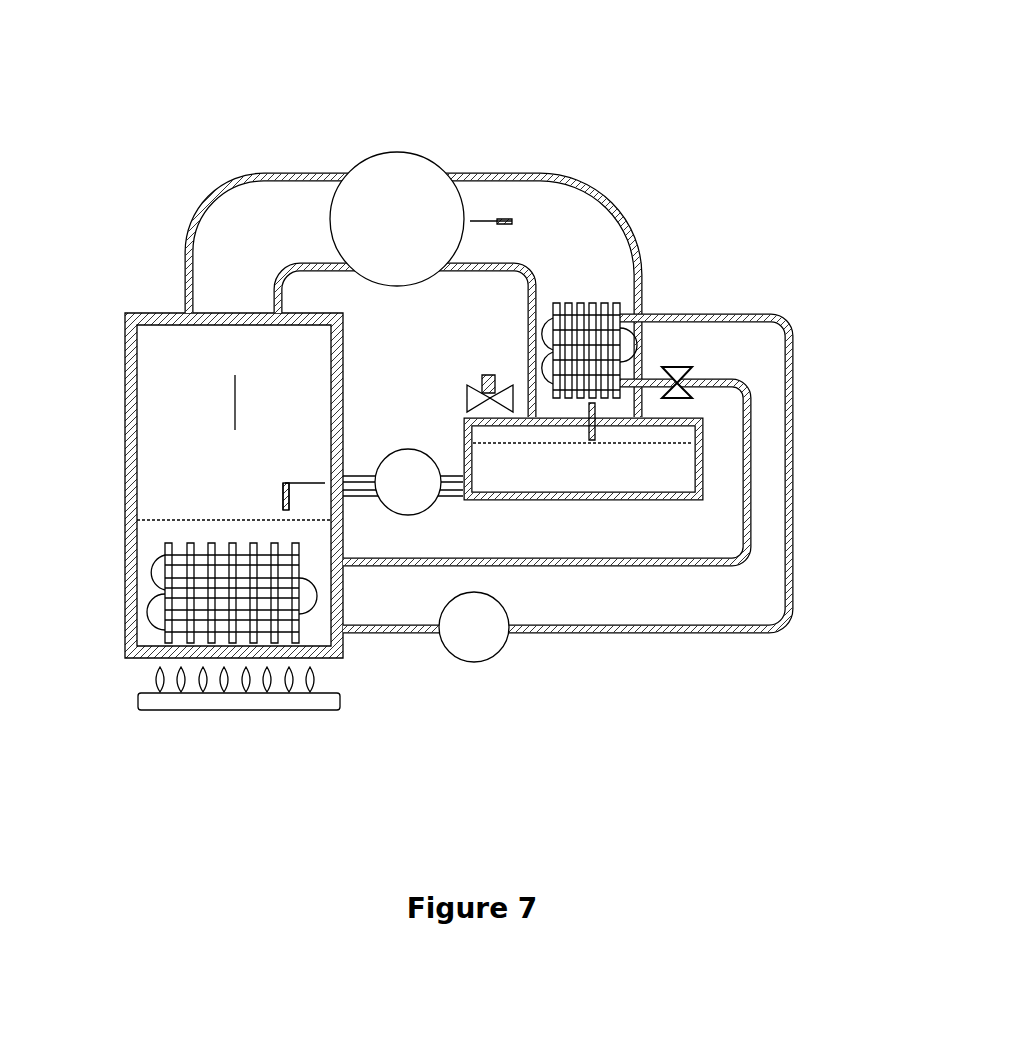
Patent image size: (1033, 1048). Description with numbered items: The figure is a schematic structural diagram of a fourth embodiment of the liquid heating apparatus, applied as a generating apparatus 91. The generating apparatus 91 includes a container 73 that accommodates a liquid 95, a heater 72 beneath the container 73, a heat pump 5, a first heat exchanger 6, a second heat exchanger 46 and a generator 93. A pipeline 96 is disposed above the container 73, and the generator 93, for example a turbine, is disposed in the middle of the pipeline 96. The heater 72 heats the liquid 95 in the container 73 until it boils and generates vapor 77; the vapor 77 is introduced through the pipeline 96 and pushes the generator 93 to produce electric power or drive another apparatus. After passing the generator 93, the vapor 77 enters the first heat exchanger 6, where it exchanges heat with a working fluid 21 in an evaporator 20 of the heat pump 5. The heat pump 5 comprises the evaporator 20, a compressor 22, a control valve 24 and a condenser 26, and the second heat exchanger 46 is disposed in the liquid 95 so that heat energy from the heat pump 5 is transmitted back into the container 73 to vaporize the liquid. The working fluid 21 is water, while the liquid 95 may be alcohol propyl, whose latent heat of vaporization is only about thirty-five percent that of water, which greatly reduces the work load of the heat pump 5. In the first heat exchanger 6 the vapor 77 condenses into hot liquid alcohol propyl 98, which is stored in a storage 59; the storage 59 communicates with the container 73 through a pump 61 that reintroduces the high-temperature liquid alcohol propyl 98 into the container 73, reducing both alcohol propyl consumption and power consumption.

The heat pump 5 is at (566, 429).
The first heat exchanger 6 is at (620, 300).
The evaporator 20 is at (628, 344).
The working fluid 21 is at (683, 310).
The compressor 22 is at (488, 645).
The control valve 24 is at (545, 447).
The condenser 26 is at (176, 599).
The second heat exchanger 46 is at (150, 612).
The storage 59 is at (670, 503).
The pump 61 is at (408, 462).
The heater 72 is at (150, 700).
The container 73 is at (125, 432).
The vapor 77 is at (492, 212).
The generating apparatus 91 is at (447, 226).
The generator 93 is at (415, 153).
The liquid 95 is at (135, 548).
The pipeline 96 is at (308, 170).
The liquid alcohol propyl 98 is at (297, 483).